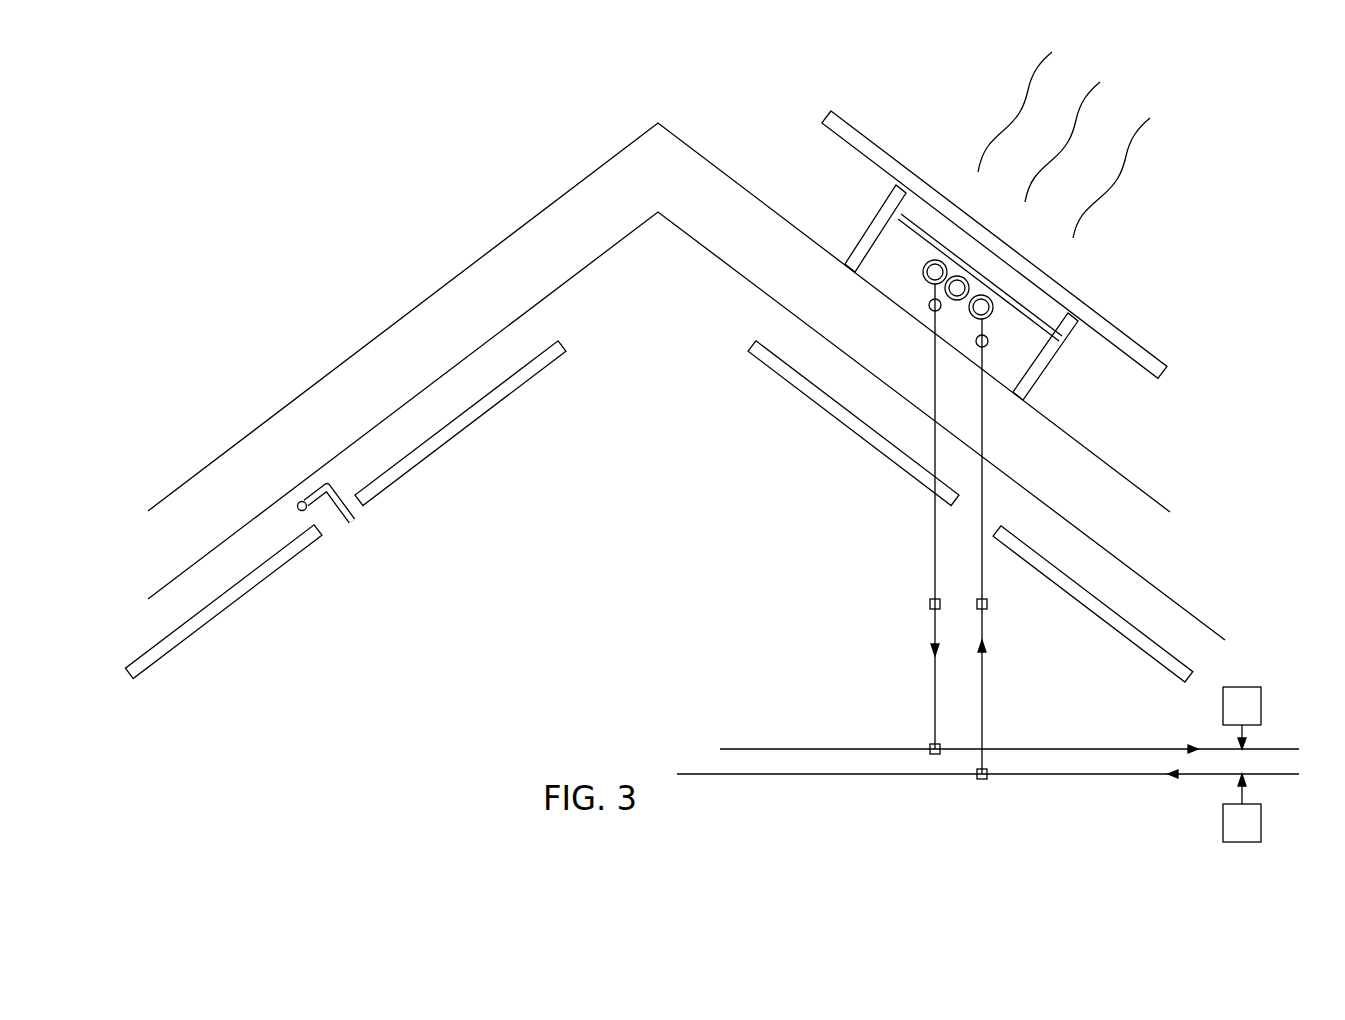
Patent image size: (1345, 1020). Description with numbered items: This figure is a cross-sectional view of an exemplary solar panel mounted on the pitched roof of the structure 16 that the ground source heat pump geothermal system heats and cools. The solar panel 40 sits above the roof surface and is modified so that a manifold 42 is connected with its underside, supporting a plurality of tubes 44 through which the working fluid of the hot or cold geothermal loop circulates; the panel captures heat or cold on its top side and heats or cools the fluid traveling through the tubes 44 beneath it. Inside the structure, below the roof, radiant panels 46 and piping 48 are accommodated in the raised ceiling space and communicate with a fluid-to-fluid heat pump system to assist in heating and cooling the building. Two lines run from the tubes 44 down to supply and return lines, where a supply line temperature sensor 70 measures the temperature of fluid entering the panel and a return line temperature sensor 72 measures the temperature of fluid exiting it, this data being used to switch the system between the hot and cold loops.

The structure 16 is at (405, 315).
The solar panel 40 is at (1149, 356).
The manifold 42 is at (1032, 332).
The tubes 44 is at (923, 268).
The radiant panels 46 is at (755, 360).
The piping 48 is at (355, 527).
The supply line temperature sensor 70 is at (1222, 828).
The return line temperature sensor 72 is at (1262, 705).